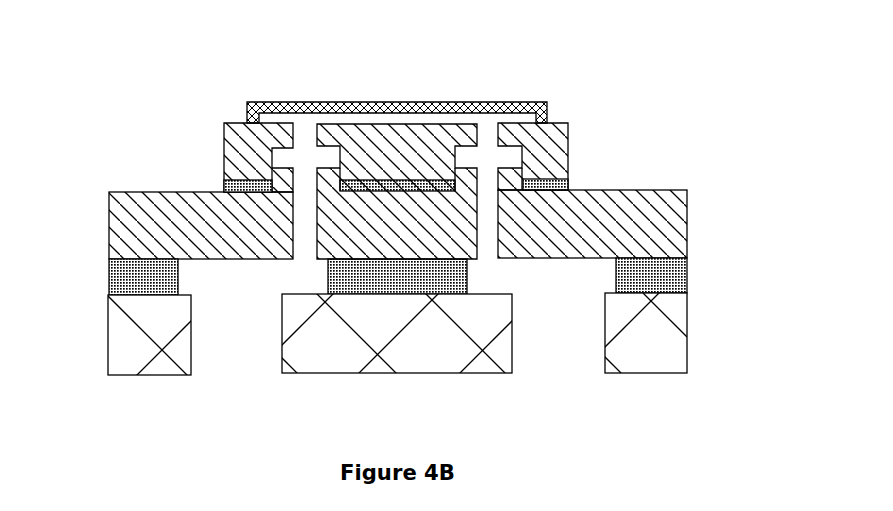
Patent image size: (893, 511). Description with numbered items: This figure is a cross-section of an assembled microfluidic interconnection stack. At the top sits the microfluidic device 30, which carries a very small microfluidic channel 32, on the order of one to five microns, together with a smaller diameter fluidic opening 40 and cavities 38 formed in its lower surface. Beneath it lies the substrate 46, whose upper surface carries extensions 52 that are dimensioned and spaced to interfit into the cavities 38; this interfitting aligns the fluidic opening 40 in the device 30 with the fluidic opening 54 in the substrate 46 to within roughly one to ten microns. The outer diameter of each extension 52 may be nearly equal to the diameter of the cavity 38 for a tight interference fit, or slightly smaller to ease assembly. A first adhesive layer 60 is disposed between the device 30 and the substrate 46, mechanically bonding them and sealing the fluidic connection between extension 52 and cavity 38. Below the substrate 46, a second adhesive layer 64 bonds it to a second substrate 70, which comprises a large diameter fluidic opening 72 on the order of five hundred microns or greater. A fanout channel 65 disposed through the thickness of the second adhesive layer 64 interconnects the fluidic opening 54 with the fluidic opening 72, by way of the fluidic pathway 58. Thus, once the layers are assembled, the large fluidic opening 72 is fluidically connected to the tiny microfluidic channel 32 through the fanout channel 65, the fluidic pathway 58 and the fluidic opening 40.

The microfluidic device 30 is at (558, 148).
The microfluidic channel 32 is at (334, 117).
The cavity 38 is at (331, 160).
The fluidic opening 40 is at (487, 138).
The substrate 46 is at (678, 211).
The extension 52 is at (277, 178).
The fluidic opening 54 is at (485, 172).
The fluidic pathway 58 is at (489, 203).
The first adhesive layer 60 is at (569, 181).
The second adhesive layer 64 is at (663, 273).
The fanout channel 65 is at (578, 270).
The second substrate 70 is at (663, 348).
The fluidic opening 72 is at (251, 356).